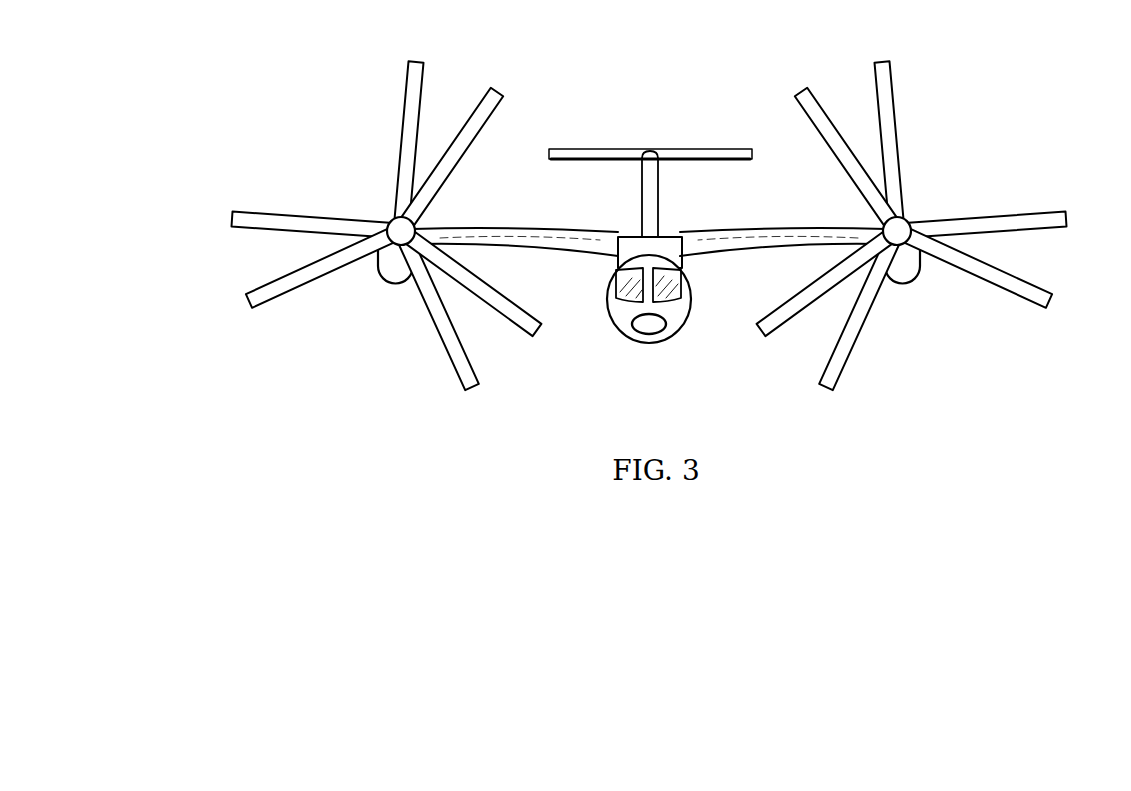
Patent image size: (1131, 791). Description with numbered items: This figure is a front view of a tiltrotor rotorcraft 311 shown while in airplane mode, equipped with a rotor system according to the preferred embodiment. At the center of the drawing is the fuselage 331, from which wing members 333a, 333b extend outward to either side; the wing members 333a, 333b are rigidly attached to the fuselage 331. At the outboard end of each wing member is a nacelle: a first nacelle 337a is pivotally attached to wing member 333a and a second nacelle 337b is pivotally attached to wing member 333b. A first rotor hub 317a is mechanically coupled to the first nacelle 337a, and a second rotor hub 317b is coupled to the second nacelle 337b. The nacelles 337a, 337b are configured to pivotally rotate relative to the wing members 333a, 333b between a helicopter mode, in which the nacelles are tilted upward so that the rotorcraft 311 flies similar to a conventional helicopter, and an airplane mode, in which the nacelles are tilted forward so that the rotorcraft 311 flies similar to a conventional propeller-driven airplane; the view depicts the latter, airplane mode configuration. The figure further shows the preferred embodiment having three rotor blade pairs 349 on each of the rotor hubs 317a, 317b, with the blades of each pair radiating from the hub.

The rotorcraft 311 is at (642, 115).
The first rotor hub 317a is at (926, 203).
The second rotor hub 317b is at (372, 203).
The fuselage 331 is at (648, 344).
The first wing member 333a is at (773, 229).
The second wing member 333b is at (523, 228).
The first nacelle 337a is at (908, 300).
The second nacelle 337b is at (390, 300).
The rotor blade pairs 349 is at (514, 86).